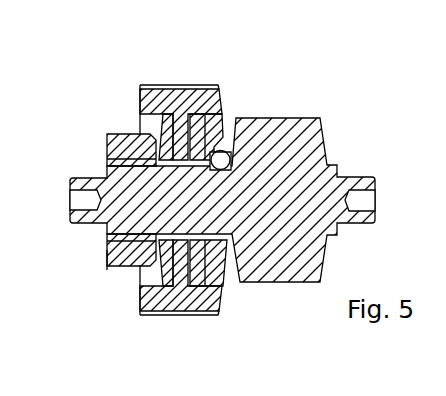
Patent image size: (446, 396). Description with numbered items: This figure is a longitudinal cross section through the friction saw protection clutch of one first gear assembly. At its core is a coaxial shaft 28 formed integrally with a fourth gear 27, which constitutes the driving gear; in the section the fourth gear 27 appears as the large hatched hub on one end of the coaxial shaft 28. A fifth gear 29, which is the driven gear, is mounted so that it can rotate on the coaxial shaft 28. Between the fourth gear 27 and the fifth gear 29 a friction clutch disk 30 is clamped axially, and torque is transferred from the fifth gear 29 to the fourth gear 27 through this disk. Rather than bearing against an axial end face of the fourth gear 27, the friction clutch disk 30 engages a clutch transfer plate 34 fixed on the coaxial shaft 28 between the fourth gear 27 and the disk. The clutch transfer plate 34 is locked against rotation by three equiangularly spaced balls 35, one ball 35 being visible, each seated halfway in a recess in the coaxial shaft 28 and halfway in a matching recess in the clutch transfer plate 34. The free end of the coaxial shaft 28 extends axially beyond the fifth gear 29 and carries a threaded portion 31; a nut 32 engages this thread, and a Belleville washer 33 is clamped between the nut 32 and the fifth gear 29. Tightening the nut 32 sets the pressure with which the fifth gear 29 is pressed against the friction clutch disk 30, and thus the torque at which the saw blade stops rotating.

The fourth gear 27 is at (320, 131).
The coaxial shaft 28 is at (114, 188).
The fifth gear 29 is at (186, 88).
The friction clutch disk 30 is at (190, 272).
The threaded portion 31 is at (107, 239).
The nut 32 is at (107, 260).
The Belleville washer 33 is at (160, 277).
The clutch transfer plate 34 is at (226, 250).
The ball 35 is at (234, 148).